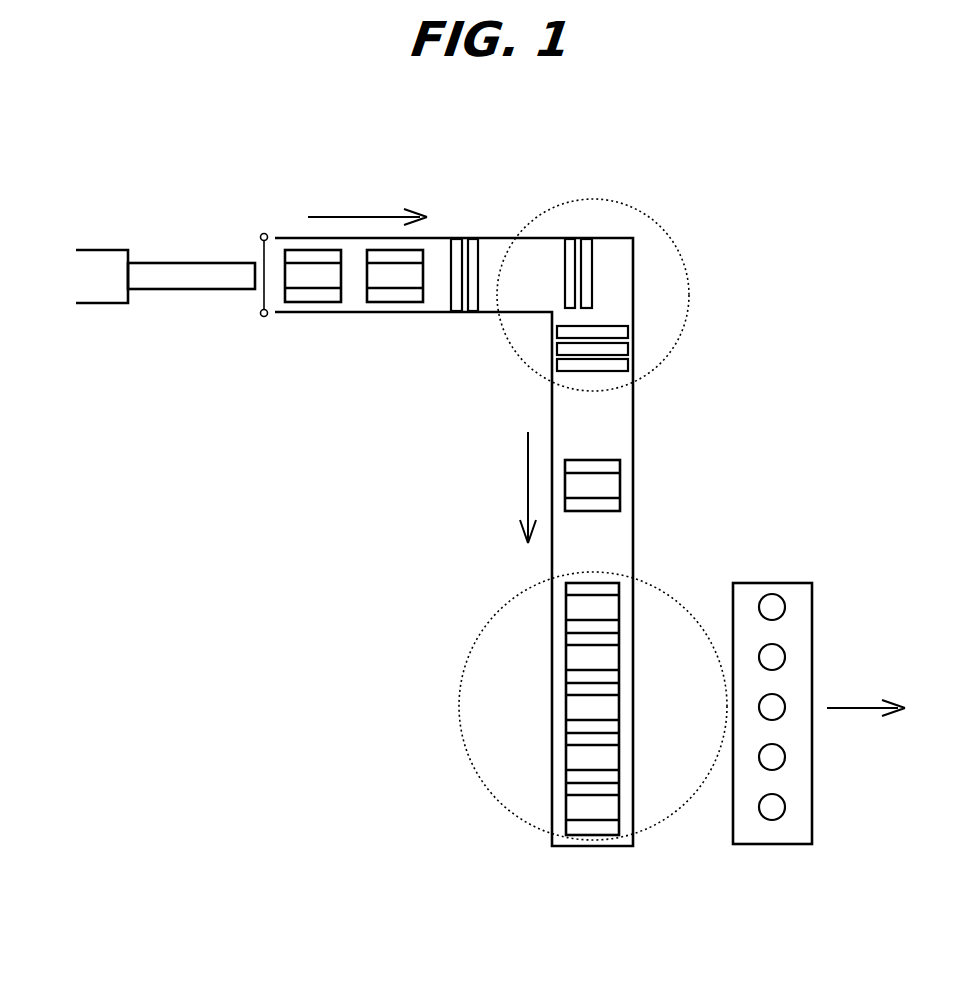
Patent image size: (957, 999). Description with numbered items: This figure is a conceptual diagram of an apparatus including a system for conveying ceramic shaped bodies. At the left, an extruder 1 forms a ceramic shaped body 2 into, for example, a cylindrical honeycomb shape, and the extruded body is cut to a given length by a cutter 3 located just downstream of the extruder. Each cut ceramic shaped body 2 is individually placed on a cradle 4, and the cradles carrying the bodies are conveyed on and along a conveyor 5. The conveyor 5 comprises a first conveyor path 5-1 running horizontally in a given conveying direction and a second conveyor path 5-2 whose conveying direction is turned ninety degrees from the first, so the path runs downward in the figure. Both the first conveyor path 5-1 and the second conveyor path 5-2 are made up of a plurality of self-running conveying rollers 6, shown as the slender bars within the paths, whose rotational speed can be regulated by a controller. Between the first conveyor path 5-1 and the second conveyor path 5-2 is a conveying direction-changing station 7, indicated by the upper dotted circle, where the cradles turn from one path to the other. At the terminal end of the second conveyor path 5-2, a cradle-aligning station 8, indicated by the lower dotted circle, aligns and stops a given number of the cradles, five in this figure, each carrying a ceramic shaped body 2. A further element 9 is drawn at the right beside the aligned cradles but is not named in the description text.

The extruder 1 is at (110, 250).
The ceramic shaped body 2 is at (185, 290).
The cutter 3 is at (264, 236).
The cradle 4 is at (340, 297).
The conveyor 5 is at (497, 220).
The first conveyor path 5-1 is at (437, 238).
The second conveyor path 5-2 is at (635, 452).
The self-running conveying roller 6 is at (475, 280).
The conveying direction-changing station 7 is at (667, 230).
The cradle-aligning station 8 is at (672, 600).
The storage magazine 9 is at (793, 827).